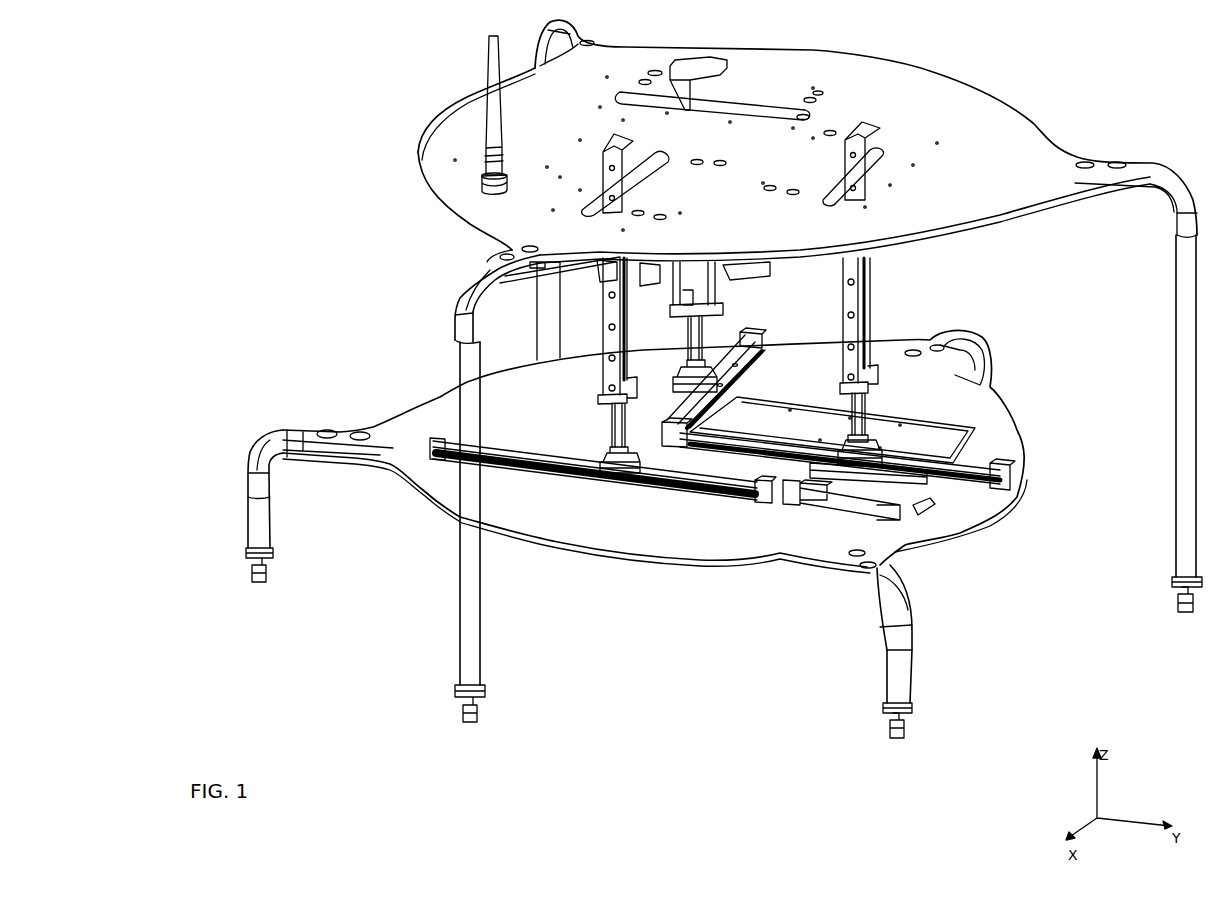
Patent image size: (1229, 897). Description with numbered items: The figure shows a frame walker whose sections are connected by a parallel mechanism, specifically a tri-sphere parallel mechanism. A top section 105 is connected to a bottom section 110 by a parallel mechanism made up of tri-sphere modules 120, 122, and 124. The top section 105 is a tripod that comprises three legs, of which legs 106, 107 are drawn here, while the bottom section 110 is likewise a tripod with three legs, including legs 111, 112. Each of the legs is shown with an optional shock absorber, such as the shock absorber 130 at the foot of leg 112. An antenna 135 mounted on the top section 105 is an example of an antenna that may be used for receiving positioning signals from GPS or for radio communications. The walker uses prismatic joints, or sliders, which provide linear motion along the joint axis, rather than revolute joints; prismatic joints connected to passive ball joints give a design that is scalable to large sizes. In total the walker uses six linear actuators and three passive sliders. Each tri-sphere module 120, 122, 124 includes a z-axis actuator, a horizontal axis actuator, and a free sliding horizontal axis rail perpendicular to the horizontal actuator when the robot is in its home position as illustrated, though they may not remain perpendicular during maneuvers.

The top section 105 is at (895, 99).
The leg 106 is at (1167, 467).
The leg 107 is at (488, 627).
The bottom section 110 is at (632, 522).
The leg 111 is at (273, 522).
The leg 112 is at (915, 668).
The tri-sphere module 120 is at (597, 372).
The tri-sphere module 122 is at (730, 302).
The tri-sphere module 124 is at (877, 300).
The shock absorber 130 is at (883, 730).
The antenna 135 is at (475, 48).